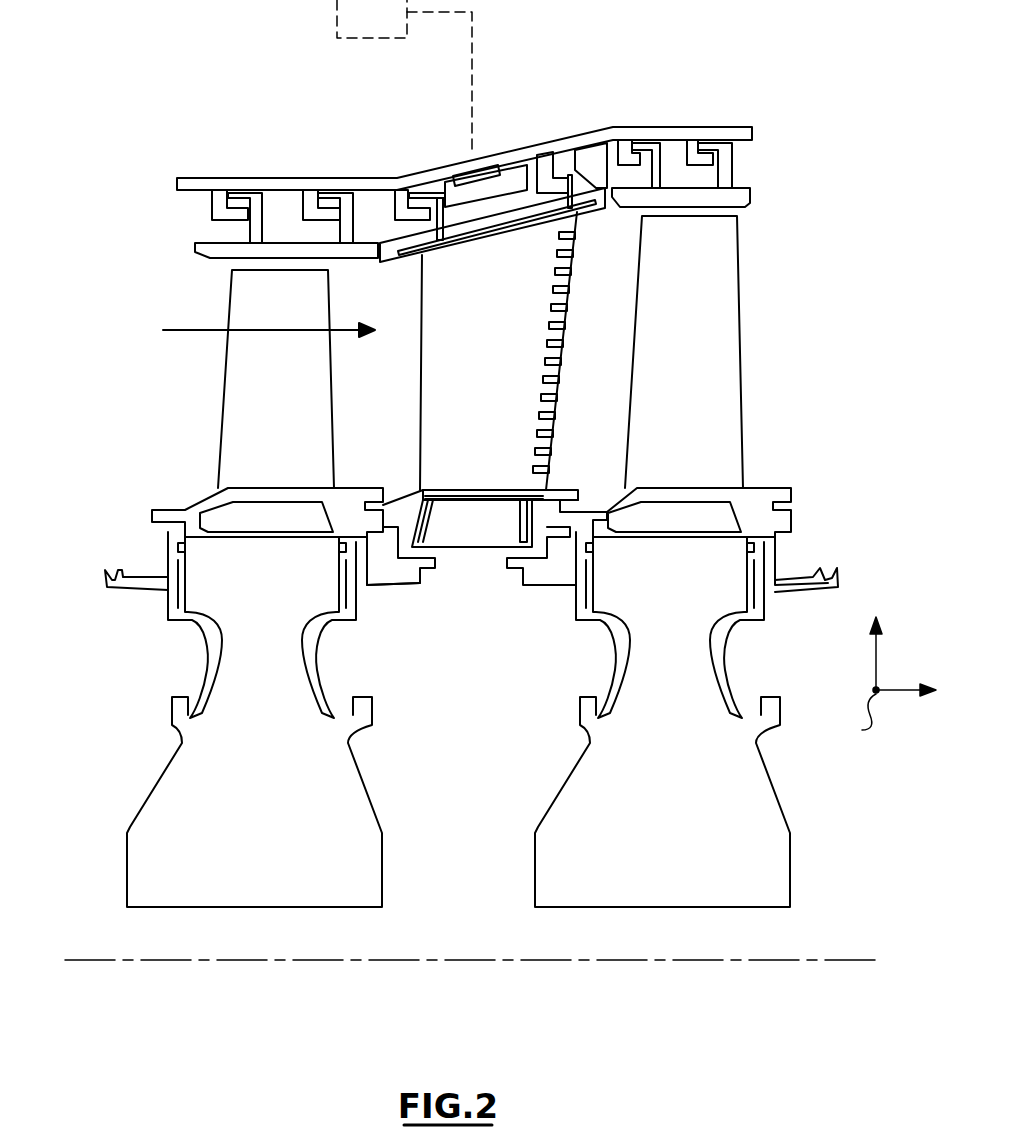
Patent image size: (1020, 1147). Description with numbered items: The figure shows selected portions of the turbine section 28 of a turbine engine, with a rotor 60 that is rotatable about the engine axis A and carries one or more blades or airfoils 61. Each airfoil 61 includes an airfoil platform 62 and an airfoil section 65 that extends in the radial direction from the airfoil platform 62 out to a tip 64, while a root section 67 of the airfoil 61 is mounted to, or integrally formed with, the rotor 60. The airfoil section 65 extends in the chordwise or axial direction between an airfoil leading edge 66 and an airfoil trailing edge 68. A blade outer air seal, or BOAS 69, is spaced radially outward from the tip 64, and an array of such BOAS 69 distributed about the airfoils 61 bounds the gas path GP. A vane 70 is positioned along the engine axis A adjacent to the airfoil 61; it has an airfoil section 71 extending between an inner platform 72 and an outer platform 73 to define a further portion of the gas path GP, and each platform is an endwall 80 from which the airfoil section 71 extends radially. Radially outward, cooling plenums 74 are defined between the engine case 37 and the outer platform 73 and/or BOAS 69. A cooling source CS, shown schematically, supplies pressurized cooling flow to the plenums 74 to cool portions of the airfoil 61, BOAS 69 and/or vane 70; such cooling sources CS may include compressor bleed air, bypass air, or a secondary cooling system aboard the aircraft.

The turbine section 28 is at (99, 112).
The engine case 37 is at (237, 176).
The cooling cavities or plenums 74 is at (279, 210).
The blade outer air seal (BOAS) 69 is at (182, 246).
The tip 64 is at (253, 270).
The airfoil 61 is at (345, 379).
The airfoil section 65 is at (253, 387).
The airfoil leading edge 66 is at (220, 429).
The airfoil trailing edge 68 is at (333, 436).
The airfoil platform 62 is at (168, 507).
The root section 67 is at (205, 585).
The rotor 60 is at (135, 790).
The platform or endwall 80 is at (482, 240).
The outer platform 73 is at (594, 212).
The vane 70 is at (576, 346).
The airfoil section 71 is at (512, 432).
The inner platform 72 is at (565, 490).
The gas path GP is at (178, 332).
The cooling source CS is at (388, 33).
The engine axis A is at (836, 960).